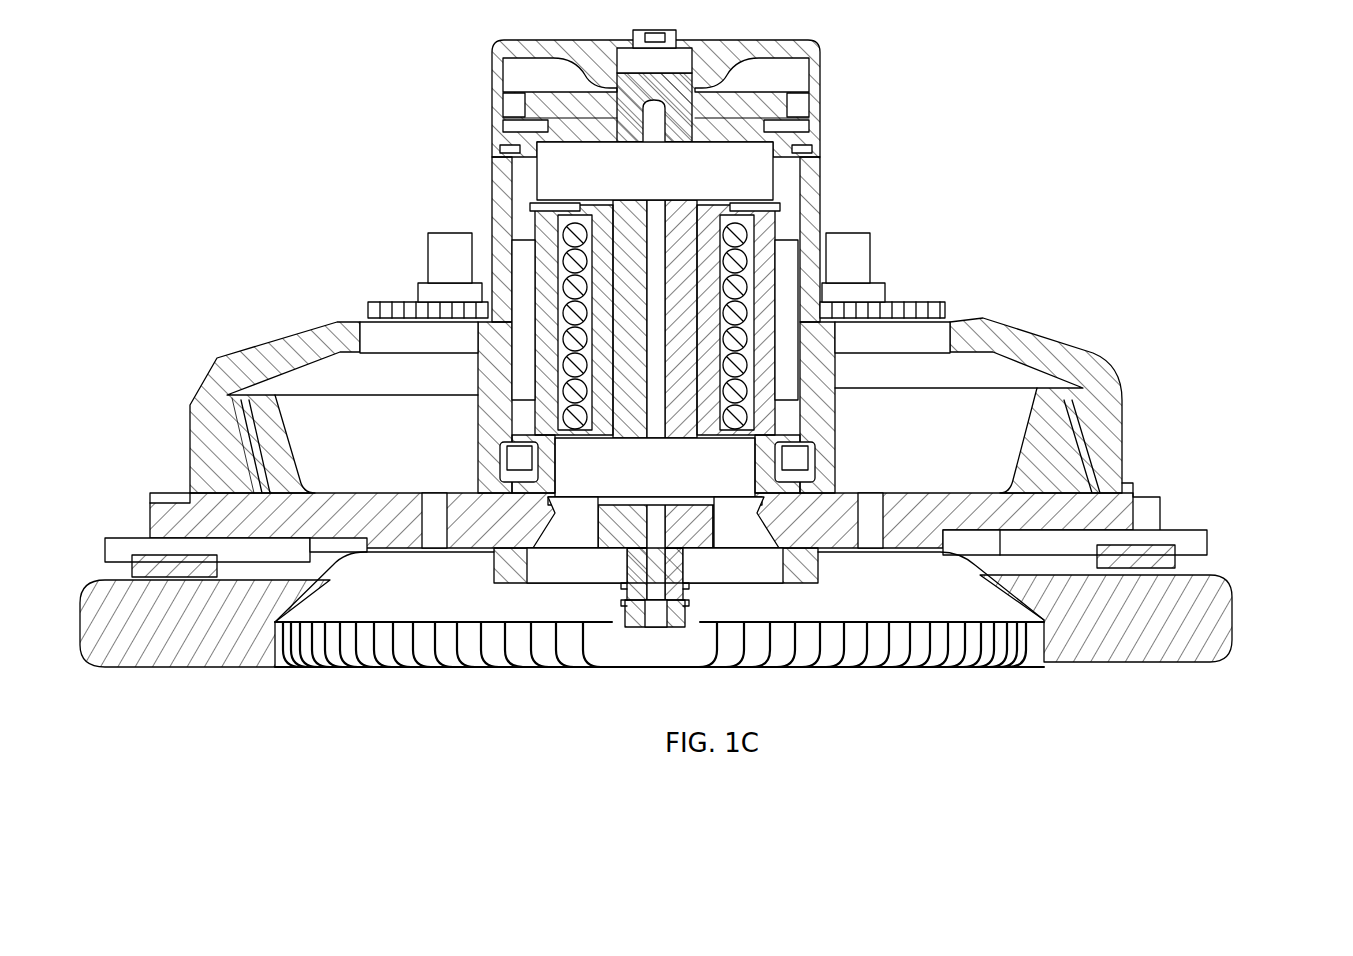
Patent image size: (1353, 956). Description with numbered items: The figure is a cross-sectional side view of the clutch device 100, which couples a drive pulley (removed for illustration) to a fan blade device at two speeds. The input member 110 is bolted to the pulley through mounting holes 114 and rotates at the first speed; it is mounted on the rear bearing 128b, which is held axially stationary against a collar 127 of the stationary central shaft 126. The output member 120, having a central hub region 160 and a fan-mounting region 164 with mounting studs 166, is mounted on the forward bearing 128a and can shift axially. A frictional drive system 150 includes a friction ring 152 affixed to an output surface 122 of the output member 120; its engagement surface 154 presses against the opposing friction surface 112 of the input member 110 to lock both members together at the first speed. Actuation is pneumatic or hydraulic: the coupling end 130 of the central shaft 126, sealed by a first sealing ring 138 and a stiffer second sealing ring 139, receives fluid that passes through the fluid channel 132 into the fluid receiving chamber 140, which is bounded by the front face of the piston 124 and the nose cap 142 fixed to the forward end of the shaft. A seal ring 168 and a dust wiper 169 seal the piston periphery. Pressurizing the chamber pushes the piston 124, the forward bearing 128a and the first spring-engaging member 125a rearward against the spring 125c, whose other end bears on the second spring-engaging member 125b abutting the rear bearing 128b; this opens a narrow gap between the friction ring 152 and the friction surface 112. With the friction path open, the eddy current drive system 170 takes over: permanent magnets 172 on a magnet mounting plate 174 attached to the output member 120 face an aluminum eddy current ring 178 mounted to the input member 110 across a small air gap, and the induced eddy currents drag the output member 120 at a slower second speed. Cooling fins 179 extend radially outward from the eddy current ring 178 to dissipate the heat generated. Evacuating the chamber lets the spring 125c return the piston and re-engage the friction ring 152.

The clutch device 100 is at (698, 362).
The input member 110 is at (989, 343).
The friction surface 112 is at (1080, 430).
The mounting holes 114 is at (870, 497).
The output member 120 is at (287, 330).
The output surface 122 is at (1095, 455).
The piston 124 is at (580, 90).
The first spring-engaging member 125a is at (540, 205).
The second spring-engaging member 125b is at (525, 447).
The spring 125c is at (575, 385).
The central shaft 126 is at (655, 118).
The collar 127 is at (700, 315).
The forward bearing 128a is at (655, 171).
The rear bearing 128b is at (655, 471).
The coupling end 130 is at (633, 580).
The fluid channel 132 is at (818, 62).
The first sealing ring 138 is at (625, 620).
The second sealing ring 139 is at (625, 600).
The fluid receiving chamber 140 is at (598, 100).
The nose cap 142 is at (500, 54).
The frictional drive system 150 is at (107, 428).
The friction ring 152 is at (235, 472).
The engagement surface 154 is at (245, 452).
The central hub region 160 is at (649, 94).
The fan-mounting region 164 is at (880, 300).
The mounting studs 166 is at (445, 252).
The seal ring 168 is at (800, 108).
The dust wiper 169 is at (500, 148).
The eddy current drive system 170 is at (804, 548).
The permanent magnets 172 is at (1160, 555).
The magnet mounting plate 174 is at (1185, 540).
The eddy current ring 178 is at (1105, 583).
The cooling fins 179 is at (656, 621).